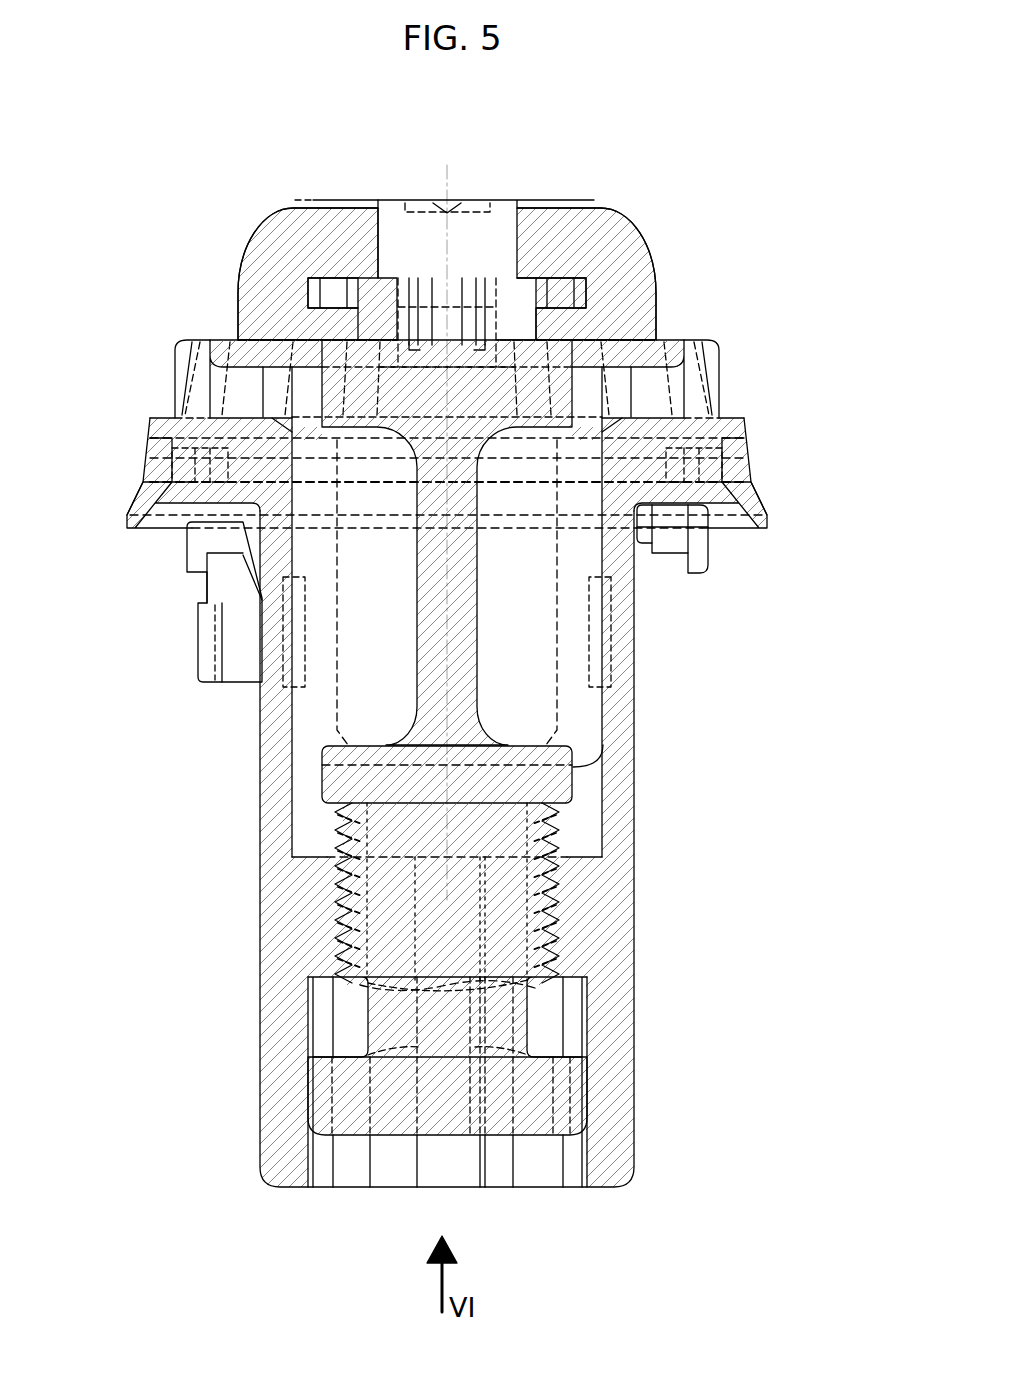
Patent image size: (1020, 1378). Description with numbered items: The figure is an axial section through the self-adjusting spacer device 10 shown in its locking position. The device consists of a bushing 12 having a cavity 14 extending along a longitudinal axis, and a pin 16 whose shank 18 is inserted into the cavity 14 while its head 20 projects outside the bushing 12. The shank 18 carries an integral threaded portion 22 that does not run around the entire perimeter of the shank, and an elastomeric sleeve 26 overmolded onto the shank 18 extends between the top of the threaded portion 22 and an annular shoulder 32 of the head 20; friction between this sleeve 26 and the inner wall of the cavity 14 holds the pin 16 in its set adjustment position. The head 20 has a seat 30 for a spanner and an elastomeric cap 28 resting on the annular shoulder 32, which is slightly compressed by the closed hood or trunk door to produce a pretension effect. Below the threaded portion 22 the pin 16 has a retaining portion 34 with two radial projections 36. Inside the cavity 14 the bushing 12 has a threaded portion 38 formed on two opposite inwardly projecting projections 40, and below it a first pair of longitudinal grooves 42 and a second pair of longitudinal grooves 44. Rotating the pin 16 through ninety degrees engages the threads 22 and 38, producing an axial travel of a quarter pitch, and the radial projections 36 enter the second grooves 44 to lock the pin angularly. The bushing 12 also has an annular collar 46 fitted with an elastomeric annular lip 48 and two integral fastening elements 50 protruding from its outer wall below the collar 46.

The self-adjusting spacer device 10 is at (197, 166).
The bushing 12 is at (666, 803).
The cavity 14 is at (293, 842).
The pin 16 is at (637, 174).
The shank 18 is at (318, 782).
The head 20 is at (659, 228).
The threaded portion 22 is at (345, 845).
The sleeve 26 is at (588, 610).
The cap 28 is at (268, 246).
The seat 30 is at (487, 287).
The annular shoulder 32 is at (672, 337).
The retaining portion 34 is at (394, 1142).
The radial projections 36 is at (323, 1103).
The threaded portion 38 is at (350, 985).
The projections 40 is at (290, 935).
The first pair of longitudinal grooves 42 is at (450, 1173).
The second pair of longitudinal grooves 44 is at (320, 1172).
The annular collar 46 is at (748, 438).
The annular lip 48 is at (765, 506).
The fastening elements 50 is at (712, 557).